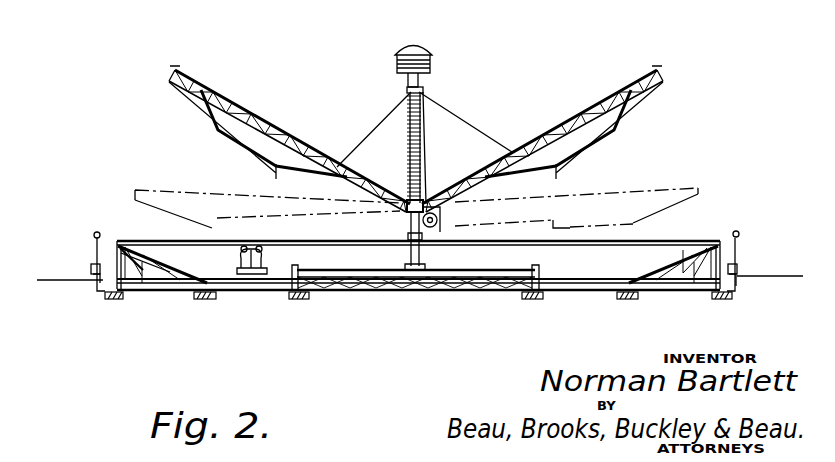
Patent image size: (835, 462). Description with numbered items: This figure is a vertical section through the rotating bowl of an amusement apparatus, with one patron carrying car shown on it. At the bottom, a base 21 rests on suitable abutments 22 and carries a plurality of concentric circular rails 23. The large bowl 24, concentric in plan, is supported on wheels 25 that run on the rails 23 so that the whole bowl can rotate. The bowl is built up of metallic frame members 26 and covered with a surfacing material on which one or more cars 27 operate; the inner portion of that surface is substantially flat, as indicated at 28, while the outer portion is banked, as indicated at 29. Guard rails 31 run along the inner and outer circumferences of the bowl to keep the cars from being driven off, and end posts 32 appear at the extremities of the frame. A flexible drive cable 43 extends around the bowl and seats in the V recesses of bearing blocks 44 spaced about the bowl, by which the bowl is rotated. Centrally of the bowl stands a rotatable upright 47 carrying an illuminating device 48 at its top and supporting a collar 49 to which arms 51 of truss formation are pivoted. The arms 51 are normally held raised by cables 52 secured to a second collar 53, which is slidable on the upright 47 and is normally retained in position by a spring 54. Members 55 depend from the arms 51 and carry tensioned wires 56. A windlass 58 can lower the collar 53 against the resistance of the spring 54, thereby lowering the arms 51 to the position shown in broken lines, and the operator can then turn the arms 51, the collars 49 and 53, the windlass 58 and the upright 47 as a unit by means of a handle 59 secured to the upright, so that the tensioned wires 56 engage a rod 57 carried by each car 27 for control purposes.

The base 21 is at (223, 291).
The abutments 22 is at (627, 294).
The concentric circular rails 23 is at (187, 292).
The bowl 24 is at (187, 272).
The wheels 25 is at (110, 282).
The metallic frame members 26 is at (141, 252).
The cars 27 is at (273, 257).
The flat inner surface portion 28 is at (567, 278).
The banked outer surface portion 29 is at (171, 272).
The guard rails 31 is at (118, 243).
The end post 32 is at (114, 244).
The flexible drive cable 43 is at (100, 268).
The bearing blocks 44 is at (108, 278).
The rotatable upright 47 is at (423, 89).
The illuminating device 48 is at (415, 45).
The collar 49 is at (410, 207).
The arms 51 is at (248, 122).
The cables 52 is at (377, 127).
The collar 53 is at (410, 88).
The spring 54 is at (410, 152).
The members 55 is at (170, 72).
The tensioned wires 56 is at (186, 98).
The rod 57 is at (250, 246).
The windlass 58 is at (437, 221).
The handle 59 is at (503, 238).